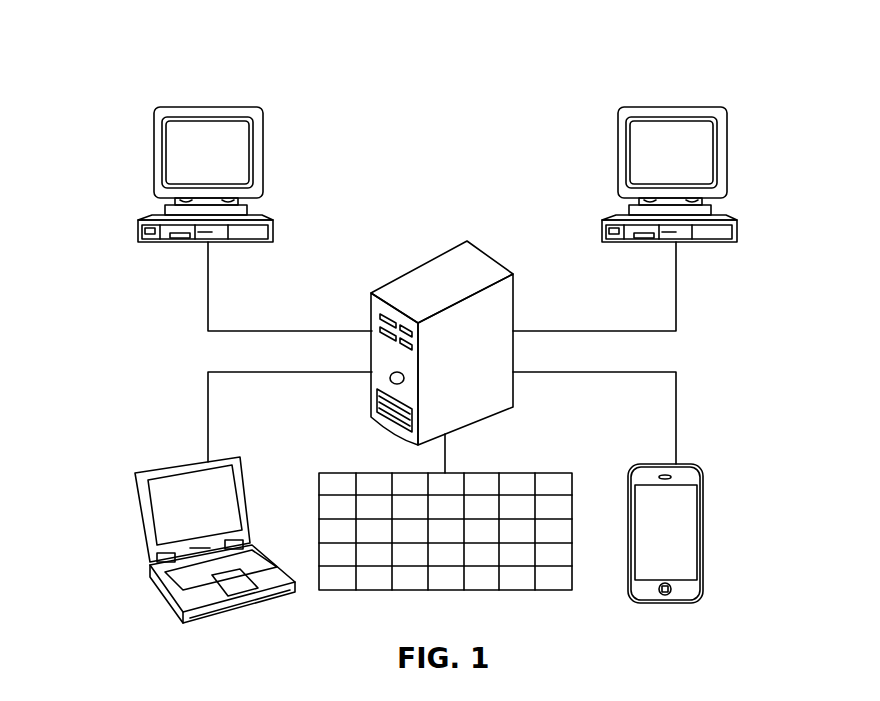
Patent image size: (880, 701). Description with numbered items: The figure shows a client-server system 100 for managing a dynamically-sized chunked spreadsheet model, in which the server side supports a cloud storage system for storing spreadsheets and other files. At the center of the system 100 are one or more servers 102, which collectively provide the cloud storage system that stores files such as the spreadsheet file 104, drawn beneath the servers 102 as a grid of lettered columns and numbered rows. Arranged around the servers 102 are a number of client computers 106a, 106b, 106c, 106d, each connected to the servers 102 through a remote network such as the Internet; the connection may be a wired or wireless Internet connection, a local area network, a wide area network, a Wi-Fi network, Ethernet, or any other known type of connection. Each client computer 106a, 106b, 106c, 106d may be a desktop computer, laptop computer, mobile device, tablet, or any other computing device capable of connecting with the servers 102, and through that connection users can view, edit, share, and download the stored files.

The system 100 is at (144, 36).
The servers 102 is at (429, 264).
The spreadsheet file 104 is at (380, 471).
The client computer 106a is at (201, 108).
The client computer 106b is at (668, 108).
The client computer 106c is at (182, 462).
The client computer 106d is at (647, 463).